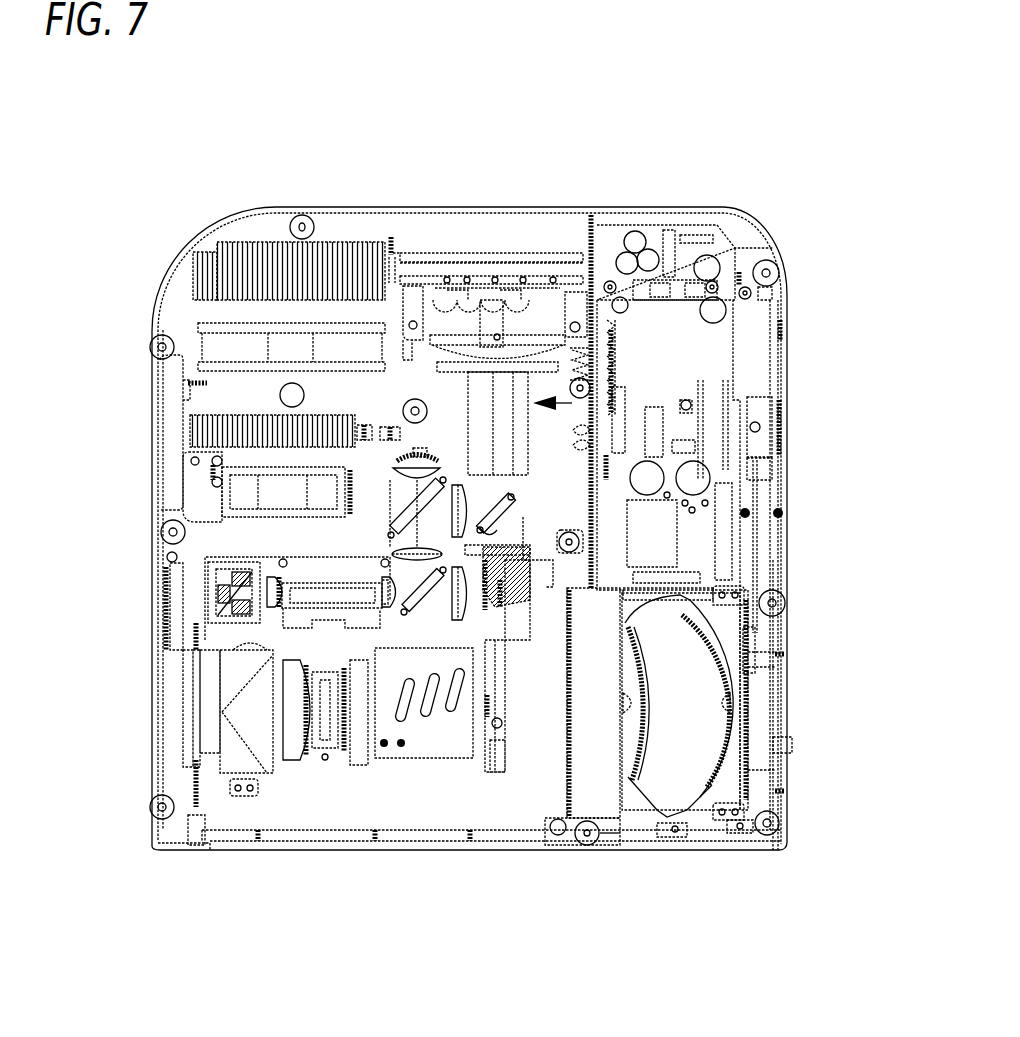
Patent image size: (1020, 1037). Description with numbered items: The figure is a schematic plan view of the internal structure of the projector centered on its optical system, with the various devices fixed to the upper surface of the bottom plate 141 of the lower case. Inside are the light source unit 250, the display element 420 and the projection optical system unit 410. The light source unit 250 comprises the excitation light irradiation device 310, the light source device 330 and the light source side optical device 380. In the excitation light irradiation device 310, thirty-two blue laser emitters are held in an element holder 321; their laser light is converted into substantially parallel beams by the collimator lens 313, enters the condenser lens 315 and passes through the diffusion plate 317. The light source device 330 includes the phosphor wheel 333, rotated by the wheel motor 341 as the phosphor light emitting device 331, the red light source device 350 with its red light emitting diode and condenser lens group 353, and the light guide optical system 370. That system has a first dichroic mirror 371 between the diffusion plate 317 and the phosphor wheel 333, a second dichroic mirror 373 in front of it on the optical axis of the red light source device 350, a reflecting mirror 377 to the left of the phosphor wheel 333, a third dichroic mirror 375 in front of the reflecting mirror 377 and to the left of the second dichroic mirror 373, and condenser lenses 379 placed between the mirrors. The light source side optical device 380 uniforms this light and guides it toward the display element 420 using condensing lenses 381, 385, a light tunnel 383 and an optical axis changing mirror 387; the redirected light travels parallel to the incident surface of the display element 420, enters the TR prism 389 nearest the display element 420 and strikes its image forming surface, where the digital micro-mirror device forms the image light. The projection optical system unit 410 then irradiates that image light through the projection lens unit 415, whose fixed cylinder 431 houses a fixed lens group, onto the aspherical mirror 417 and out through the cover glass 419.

The bottom plate 141 is at (463, 233).
The light source unit 250 is at (572, 403).
The excitation light irradiation device 310 is at (648, 224).
The collimator lens 313 is at (505, 305).
The condenser lens 315 is at (523, 360).
The diffusion plate 317 is at (523, 473).
The element holder 321 is at (495, 265).
The light source device 330 is at (555, 610).
The phosphor light emitting device 331 is at (760, 718).
The phosphor wheel 333 is at (755, 706).
The wheel motor 341 is at (560, 683).
The red light source device 350 is at (236, 362).
The condenser lens group 353 is at (410, 447).
The light guide optical system 370 is at (461, 673).
The first dichroic mirror 371 is at (512, 516).
The second dichroic mirror 373 is at (405, 505).
The third dichroic mirror 375 is at (433, 596).
The reflecting mirror 377 is at (593, 753).
The condenser lenses 379 is at (395, 552).
The light source side optical device 380 is at (208, 763).
The condensing lens 381 is at (383, 596).
The light tunnel 383 is at (302, 593).
The condensing lens 385 is at (268, 593).
The optical axis changing mirror 387 is at (237, 590).
The TR prism 389 is at (232, 683).
The projection optical system unit 410 is at (602, 808).
The projection lens unit 415 is at (453, 768).
The aspherical mirror 417 is at (508, 600).
The cover glass 419 is at (683, 753).
The display element 420 is at (213, 727).
The fixed cylinder 431 is at (480, 650).